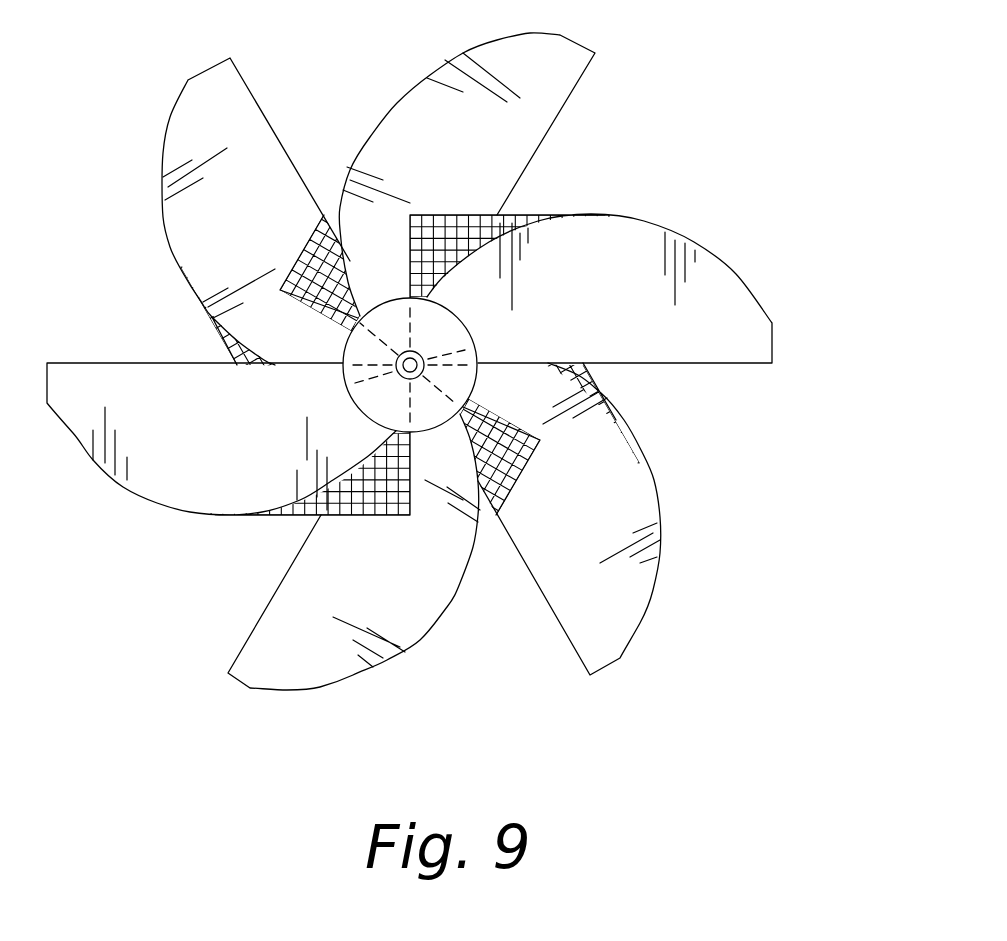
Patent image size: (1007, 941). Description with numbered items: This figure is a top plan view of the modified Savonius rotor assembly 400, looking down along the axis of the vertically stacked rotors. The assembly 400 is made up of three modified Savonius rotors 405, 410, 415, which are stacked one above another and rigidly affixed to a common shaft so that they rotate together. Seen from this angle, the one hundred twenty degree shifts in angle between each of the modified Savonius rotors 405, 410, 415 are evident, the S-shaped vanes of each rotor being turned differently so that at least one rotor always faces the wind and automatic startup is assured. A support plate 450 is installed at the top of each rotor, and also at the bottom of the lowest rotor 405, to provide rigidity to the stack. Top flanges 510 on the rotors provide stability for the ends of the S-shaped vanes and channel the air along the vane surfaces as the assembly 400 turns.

The rotor assembly 400 is at (462, 361).
The modified Savonius rotor 405 is at (641, 601).
The modified Savonius rotor 410 is at (243, 648).
The modified Savonius rotor 415 is at (84, 362).
The support plate 450 is at (458, 326).
The top flanges 510 is at (403, 361).